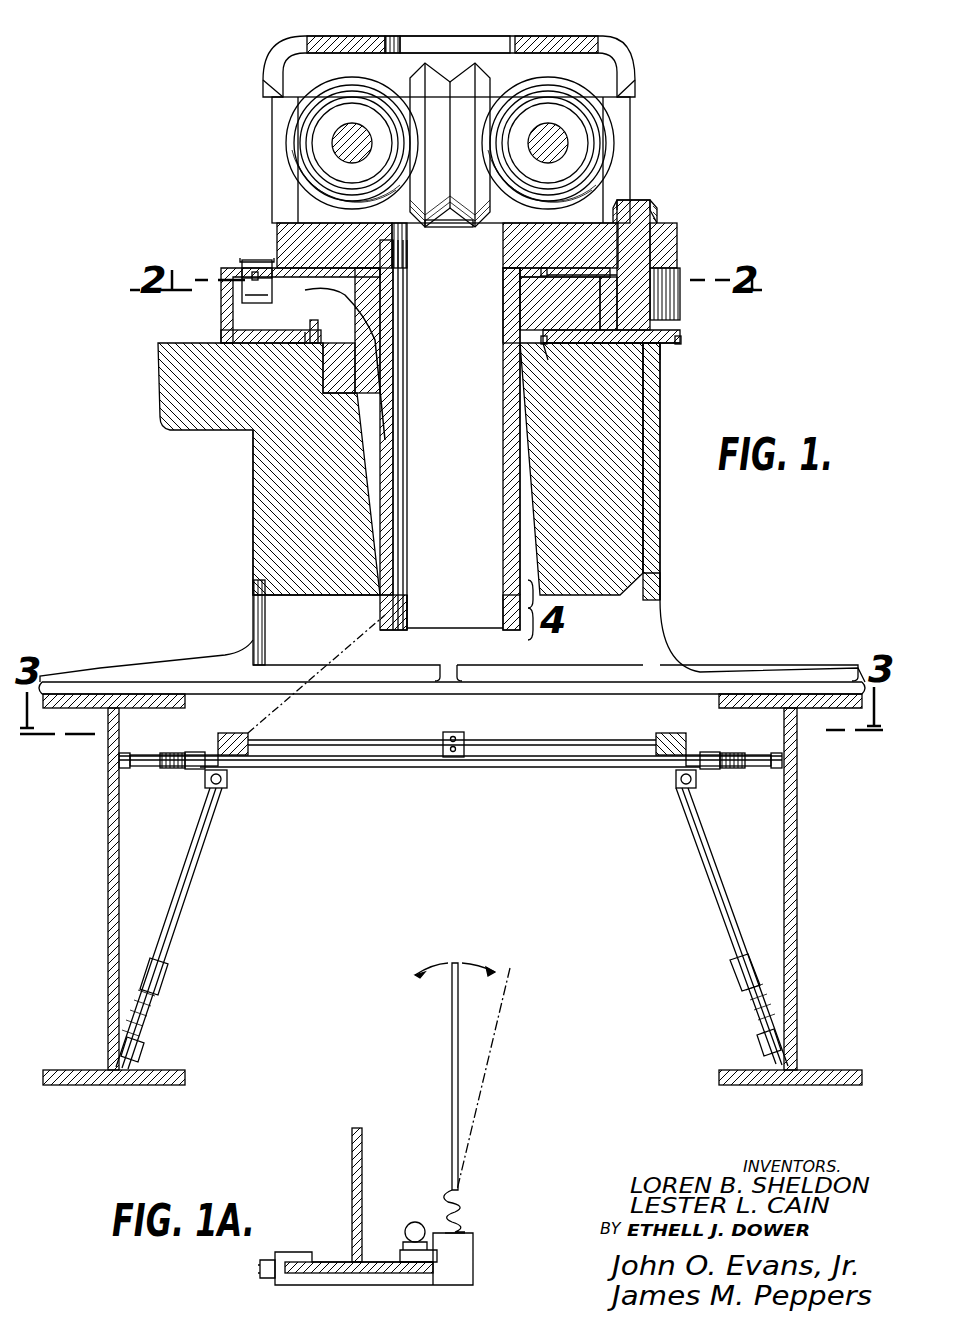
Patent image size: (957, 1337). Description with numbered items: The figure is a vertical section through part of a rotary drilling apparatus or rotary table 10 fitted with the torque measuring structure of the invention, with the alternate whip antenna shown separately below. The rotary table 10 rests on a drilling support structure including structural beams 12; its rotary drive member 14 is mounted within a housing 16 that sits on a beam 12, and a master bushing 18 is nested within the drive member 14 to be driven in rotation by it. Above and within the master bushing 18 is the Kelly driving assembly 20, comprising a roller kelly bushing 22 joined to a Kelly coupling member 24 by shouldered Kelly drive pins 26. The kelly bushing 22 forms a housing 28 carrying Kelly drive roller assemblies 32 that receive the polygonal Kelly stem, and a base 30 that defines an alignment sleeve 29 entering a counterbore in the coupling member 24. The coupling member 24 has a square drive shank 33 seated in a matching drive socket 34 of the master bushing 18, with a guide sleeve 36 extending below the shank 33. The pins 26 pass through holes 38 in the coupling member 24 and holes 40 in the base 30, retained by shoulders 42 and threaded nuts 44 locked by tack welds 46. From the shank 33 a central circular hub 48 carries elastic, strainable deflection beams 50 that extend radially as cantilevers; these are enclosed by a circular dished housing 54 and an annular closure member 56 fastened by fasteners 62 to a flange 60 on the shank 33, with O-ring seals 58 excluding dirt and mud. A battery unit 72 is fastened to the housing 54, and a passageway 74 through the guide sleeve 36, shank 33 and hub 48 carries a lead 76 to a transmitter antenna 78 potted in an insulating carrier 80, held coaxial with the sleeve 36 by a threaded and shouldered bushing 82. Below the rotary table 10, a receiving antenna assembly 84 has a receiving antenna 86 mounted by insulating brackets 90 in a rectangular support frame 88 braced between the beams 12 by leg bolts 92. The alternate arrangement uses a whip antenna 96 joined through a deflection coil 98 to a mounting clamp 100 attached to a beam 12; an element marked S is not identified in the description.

In FIG. 1, the rotary table 10 is at (678, 493).
In FIG. 1, the structural beams 12 is at (108, 873).
In FIG. 1A, the structural beams 12 is at (352, 1185).
In FIG. 1, the rotary drive member 14 is at (170, 343).
In FIG. 1, the housing 16 is at (700, 680).
In FIG. 1, the master bushing 18 is at (622, 428).
In FIG. 1, the Kelly driving assembly 20 is at (240, 208).
In FIG. 1, the kelly bushing 22 is at (663, 78).
In FIG. 1, the Kelly coupling member 24 is at (668, 296).
In FIG. 1, the shouldered Kelly drive pins 26 is at (642, 198).
In FIG. 1, the housing 28 is at (560, 50).
In FIG. 1, the alignment sleeve 29 is at (520, 287).
In FIG. 1, the base 30 is at (655, 218).
In FIG. 1, the Kelly drive roller assemblies 32 is at (452, 70).
In FIG. 1, the drive shank 33 is at (360, 391).
In FIG. 1, the drive socket 34 is at (330, 381).
In FIG. 1, the guide sleeve 36 is at (505, 532).
In FIG. 1, the holes 38 is at (618, 293).
In FIG. 1, the holes 40 is at (660, 240).
In FIG. 1, the shoulders 42 is at (675, 322).
In FIG. 1, the threaded nut 44 is at (655, 205).
In FIG. 1, the tack welds 46 is at (640, 200).
In FIG. 1, the central circular hub 48 is at (368, 285).
In FIG. 1, the deflection beams 50 is at (578, 345).
In FIG. 1, the circular dished housing 54 is at (672, 336).
In FIG. 1, the annular closure member 56 is at (626, 350).
In FIG. 1, the O-ring seals 58 is at (493, 267).
In FIG. 1, the flange 60 is at (310, 330).
In FIG. 1, the fasteners 62 is at (312, 323).
In FIG. 1, the battery unit 72 is at (250, 288).
In FIG. 1, the passageway 74 is at (398, 411).
In FIG. 1, the lead 76 is at (312, 296).
In FIG. 1, the transmitter antenna 78 is at (380, 617).
In FIG. 1, the insulating carrier 80 is at (513, 630).
In FIG. 1, the threaded and shouldered bushing 82 is at (390, 630).
In FIG. 1, the receiving antenna assembly 84 is at (599, 724).
In FIG. 1, the receiving antenna 86 is at (464, 744).
In FIG. 1, the rectangular support frame 88 is at (343, 769).
In FIG. 1, the insulating brackets 90 is at (240, 757).
In FIG. 1, the leg bolts 92 is at (152, 770).
In FIG. 1A, the antenna 96 is at (480, 1070).
In FIG. 1A, the deflection coil 98 is at (460, 1208).
In FIG. 1A, the mounting clamp 100 is at (465, 1265).
In FIG. 1, the sheet S is at (326, 650).